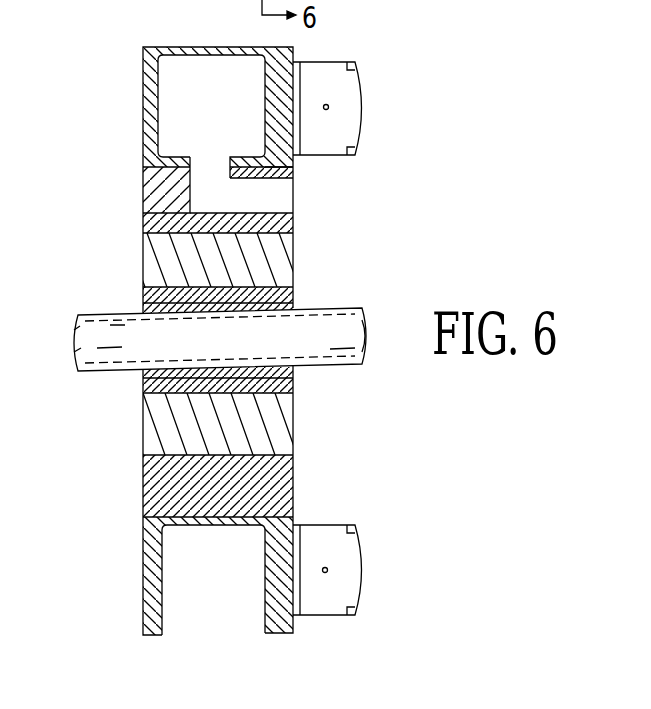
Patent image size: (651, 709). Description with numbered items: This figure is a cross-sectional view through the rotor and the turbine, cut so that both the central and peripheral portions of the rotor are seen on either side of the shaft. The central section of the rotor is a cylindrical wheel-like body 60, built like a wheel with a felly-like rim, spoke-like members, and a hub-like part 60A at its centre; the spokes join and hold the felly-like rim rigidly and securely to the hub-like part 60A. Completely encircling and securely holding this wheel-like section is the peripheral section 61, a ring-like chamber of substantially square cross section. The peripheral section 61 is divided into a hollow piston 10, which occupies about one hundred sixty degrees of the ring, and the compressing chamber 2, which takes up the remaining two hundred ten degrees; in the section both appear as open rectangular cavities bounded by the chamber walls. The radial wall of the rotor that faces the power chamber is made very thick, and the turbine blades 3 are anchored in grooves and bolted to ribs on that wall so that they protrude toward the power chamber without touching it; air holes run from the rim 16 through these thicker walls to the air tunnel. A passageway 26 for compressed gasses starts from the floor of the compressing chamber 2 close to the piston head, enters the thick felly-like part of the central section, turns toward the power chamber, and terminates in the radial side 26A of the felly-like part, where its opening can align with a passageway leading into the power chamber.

The compressing chamber 2 is at (213, 580).
The turbine blades 3 is at (327, 338).
The hollow piston 10 is at (211, 116).
The rim 16 is at (293, 158).
The passageway for compressed gasses 26 is at (218, 185).
The radial side of the felly-like part 26A is at (293, 196).
The cylindrical wheel-like body 60 is at (143, 440).
The hub-like part 60A is at (143, 298).
The peripheral section 61 is at (143, 78).